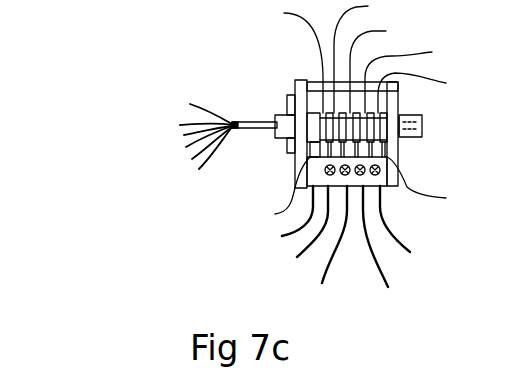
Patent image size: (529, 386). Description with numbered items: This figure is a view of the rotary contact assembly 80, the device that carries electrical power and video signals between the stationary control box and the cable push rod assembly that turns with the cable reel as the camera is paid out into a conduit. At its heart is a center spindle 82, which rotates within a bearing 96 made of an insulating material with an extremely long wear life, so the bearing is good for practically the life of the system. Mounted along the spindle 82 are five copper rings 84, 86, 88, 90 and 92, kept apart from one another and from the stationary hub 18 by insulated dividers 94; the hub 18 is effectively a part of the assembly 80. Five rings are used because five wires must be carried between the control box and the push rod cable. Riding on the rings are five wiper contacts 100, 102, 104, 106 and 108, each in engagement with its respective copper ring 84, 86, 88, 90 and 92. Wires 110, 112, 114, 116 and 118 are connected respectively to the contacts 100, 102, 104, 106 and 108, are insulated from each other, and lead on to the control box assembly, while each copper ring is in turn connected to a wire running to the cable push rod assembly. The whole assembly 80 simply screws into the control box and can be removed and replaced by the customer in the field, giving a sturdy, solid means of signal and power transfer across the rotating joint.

The stationary hub 18 is at (295, 66).
The rotary contact assembly 80 is at (181, 68).
The center spindle 82 is at (275, 113).
The copper ring 84 is at (289, 57).
The copper ring 86 is at (366, 56).
The copper ring 88 is at (384, 67).
The copper ring 90 is at (414, 78).
The copper ring 92 is at (428, 92).
The insulated dividers 94 is at (290, 94).
The bearing 96 is at (422, 128).
The wiper contact 100 is at (370, 149).
The wiper contact 102 is at (435, 183).
The wiper contact 104 is at (275, 214).
The wiper contact 106 is at (333, 150).
The wiper contact 108 is at (322, 144).
The wire 110 is at (410, 252).
The wire 112 is at (388, 287).
The wire 114 is at (324, 280).
The wire 116 is at (297, 257).
The wire 118 is at (282, 236).